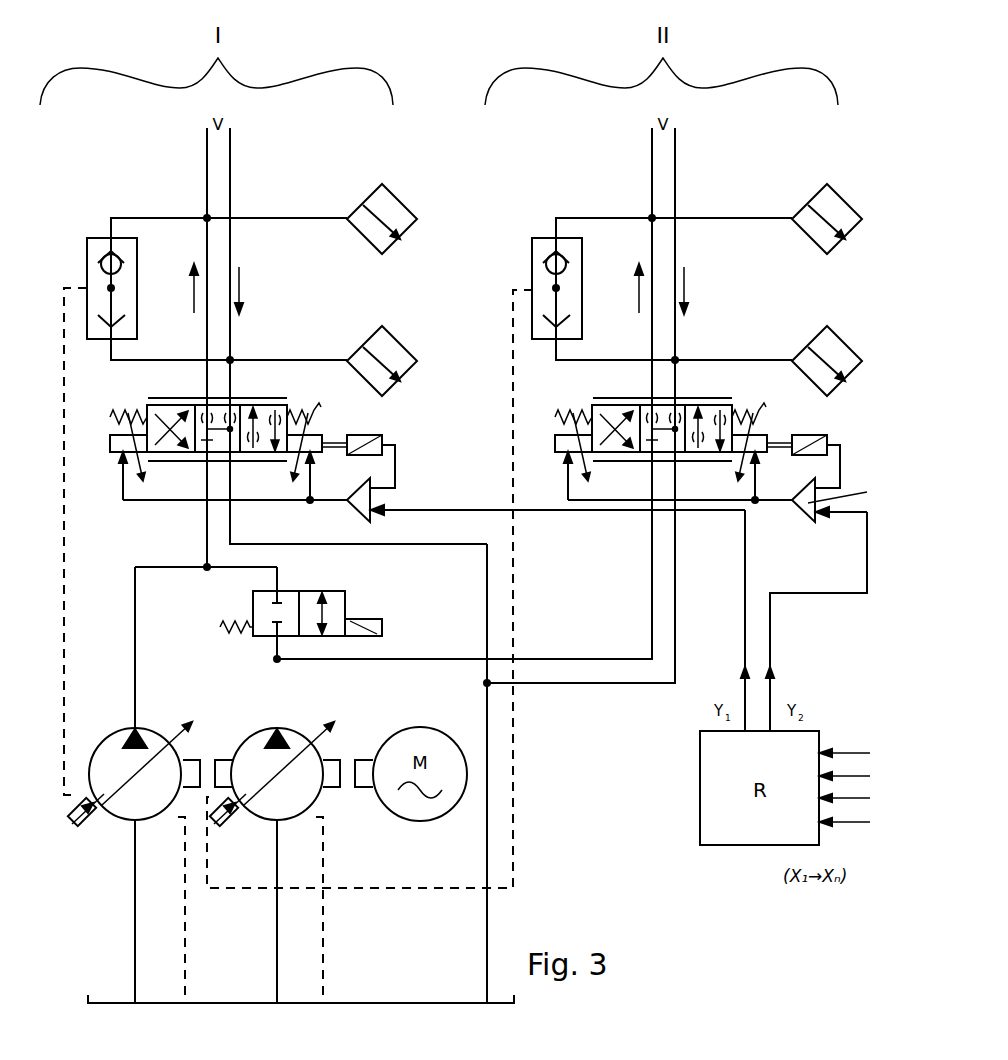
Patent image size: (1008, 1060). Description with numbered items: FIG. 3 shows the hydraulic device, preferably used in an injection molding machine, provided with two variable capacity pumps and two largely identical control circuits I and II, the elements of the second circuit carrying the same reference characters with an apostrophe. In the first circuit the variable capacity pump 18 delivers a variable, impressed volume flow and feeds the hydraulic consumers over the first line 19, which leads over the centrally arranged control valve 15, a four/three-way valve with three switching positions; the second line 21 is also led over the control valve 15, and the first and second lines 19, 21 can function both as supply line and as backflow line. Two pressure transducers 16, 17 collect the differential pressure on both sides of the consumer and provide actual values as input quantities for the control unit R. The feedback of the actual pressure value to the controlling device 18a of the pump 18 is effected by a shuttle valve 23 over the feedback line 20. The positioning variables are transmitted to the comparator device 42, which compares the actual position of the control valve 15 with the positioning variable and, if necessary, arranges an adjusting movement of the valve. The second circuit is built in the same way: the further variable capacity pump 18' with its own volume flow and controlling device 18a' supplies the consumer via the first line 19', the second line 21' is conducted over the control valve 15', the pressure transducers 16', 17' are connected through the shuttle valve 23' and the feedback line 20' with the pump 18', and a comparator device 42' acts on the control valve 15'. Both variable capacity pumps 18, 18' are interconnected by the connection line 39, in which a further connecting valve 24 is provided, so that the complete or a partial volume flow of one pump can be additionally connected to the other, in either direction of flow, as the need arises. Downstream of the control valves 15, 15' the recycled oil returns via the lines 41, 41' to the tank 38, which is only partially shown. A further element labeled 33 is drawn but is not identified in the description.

The control valve 15 is at (225, 441).
The control valve 15' is at (669, 441).
The pressure transducer 16 is at (394, 209).
The pressure transducer 16' is at (827, 204).
The pressure transducer 17 is at (394, 351).
The pressure transducer 17' is at (827, 346).
The variable capacity pump 18 is at (133, 785).
The variable capacity pump 18' is at (273, 855).
The controlling device 18a is at (94, 842).
The controlling device 18a' is at (240, 828).
The first line 19 is at (170, 266).
The first line 19' is at (618, 266).
The feedback line 20 is at (124, 645).
The feedback line 20' is at (370, 646).
The second line 21 is at (357, 336).
The second line 21' is at (701, 266).
The shuttle valve 23 is at (131, 289).
The shuttle valve 23' is at (516, 289).
The connecting valve 24 is at (335, 608).
The pump pressure line 33 is at (205, 542).
The tank 38 is at (423, 1000).
The connection line 39 is at (418, 658).
The line 41 is at (525, 773).
The line 41' is at (579, 603).
The comparator device 42 is at (546, 478).
The comparator device 42' is at (816, 583).